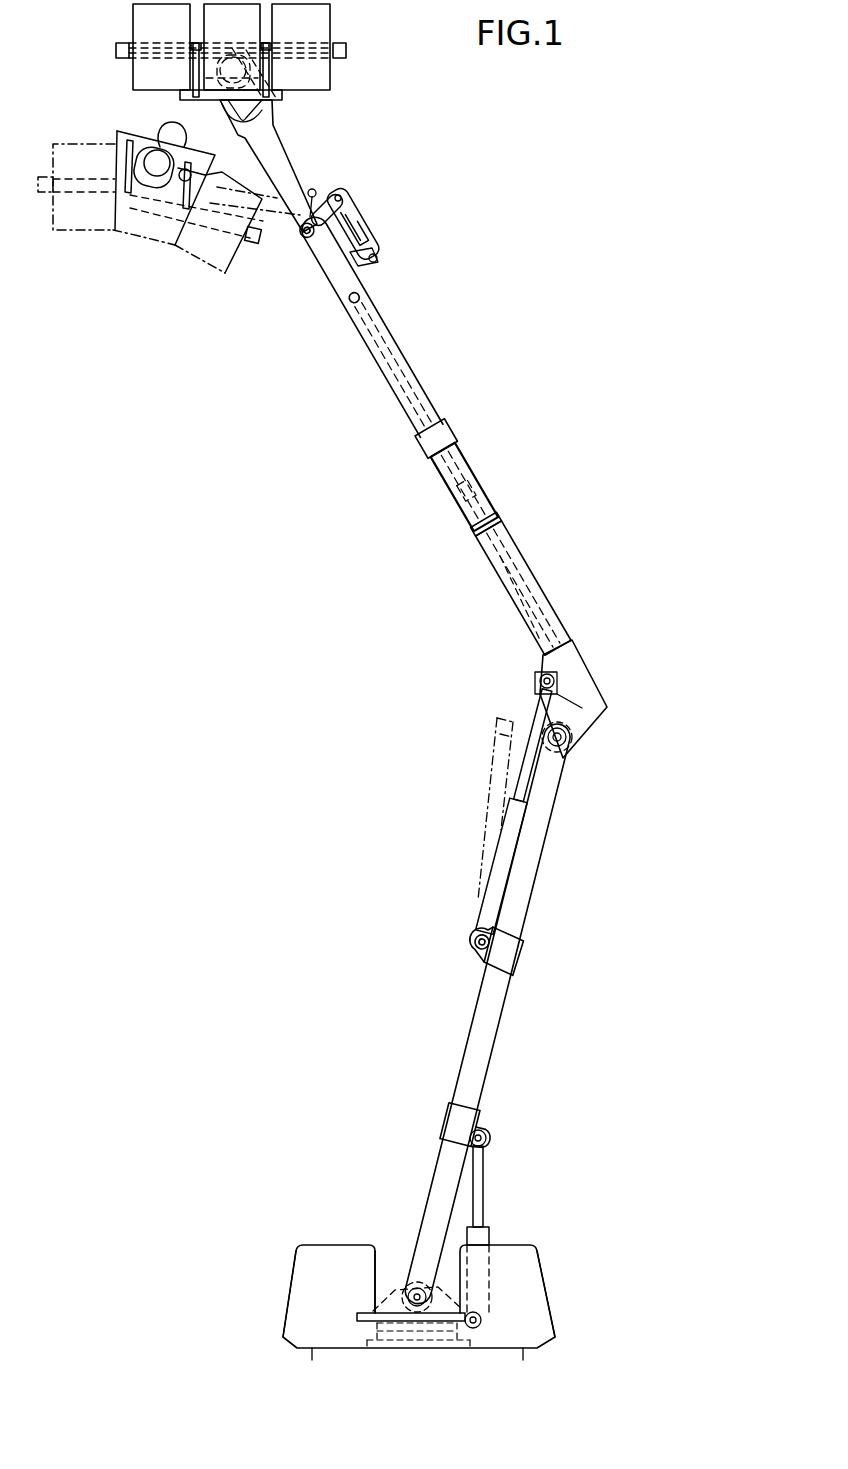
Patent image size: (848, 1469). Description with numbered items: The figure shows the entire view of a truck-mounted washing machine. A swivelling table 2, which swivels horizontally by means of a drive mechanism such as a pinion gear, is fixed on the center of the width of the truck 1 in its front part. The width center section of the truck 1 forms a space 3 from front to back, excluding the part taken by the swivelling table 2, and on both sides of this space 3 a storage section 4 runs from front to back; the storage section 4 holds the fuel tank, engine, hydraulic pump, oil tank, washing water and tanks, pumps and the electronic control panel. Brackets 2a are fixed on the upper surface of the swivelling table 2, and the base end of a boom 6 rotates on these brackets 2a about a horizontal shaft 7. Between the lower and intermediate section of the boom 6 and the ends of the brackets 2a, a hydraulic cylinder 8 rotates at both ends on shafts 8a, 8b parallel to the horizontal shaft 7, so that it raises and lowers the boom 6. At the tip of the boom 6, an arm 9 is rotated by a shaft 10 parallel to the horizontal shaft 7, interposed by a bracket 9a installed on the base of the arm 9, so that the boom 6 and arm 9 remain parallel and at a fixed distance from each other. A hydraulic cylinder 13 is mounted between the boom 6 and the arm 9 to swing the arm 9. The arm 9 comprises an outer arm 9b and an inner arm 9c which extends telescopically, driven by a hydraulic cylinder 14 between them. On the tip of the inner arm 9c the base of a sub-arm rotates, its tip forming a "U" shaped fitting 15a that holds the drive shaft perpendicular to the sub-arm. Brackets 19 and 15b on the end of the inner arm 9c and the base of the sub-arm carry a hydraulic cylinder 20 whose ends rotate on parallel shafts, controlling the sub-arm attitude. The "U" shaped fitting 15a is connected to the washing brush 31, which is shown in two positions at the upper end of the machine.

The truck 1 is at (552, 1240).
The swivelling table 2 is at (360, 1316).
The brackets 2a is at (393, 1292).
The space 3 is at (375, 1262).
The storage section 4 is at (289, 1289).
The boom 6 is at (505, 1014).
The horizontal shaft 7 is at (412, 1282).
The hydraulic cylinder 8 is at (491, 1229).
The shaft 8a is at (490, 1132).
The shaft 8b is at (482, 1320).
The arm 9 is at (467, 414).
The bracket 9a is at (592, 724).
The outer arm 9b is at (476, 482).
The inner arm 9c is at (415, 372).
The shaft 10 is at (566, 752).
The hydraulic cylinder 13 is at (481, 848).
The hydraulic cylinder 14 is at (500, 556).
The "U" shaped fitting 15a is at (274, 117).
The bracket 15b is at (314, 189).
The bracket 19 is at (381, 268).
The hydraulic cylinder 20 is at (368, 226).
The washing brush 31 is at (350, 90).